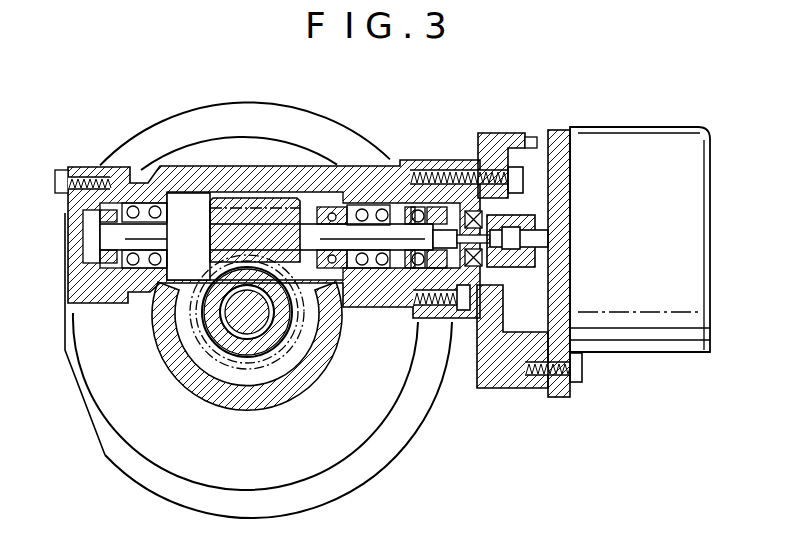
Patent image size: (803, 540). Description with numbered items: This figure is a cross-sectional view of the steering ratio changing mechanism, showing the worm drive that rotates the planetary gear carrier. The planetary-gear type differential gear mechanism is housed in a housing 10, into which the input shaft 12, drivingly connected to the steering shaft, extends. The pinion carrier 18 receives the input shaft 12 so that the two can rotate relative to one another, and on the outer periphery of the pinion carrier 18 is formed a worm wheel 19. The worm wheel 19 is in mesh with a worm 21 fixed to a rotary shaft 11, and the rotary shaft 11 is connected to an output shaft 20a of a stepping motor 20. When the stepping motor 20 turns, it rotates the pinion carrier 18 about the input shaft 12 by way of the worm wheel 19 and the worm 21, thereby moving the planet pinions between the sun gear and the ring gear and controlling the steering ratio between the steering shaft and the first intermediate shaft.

The housing 10 is at (345, 131).
The rotary shaft 11 is at (187, 216).
The worm 21 is at (252, 198).
The input shaft 12 is at (227, 337).
The pinion carrier 18 is at (275, 322).
The worm wheel 19 is at (245, 338).
The stepping motor 20 is at (642, 342).
The output shaft 20a is at (532, 238).